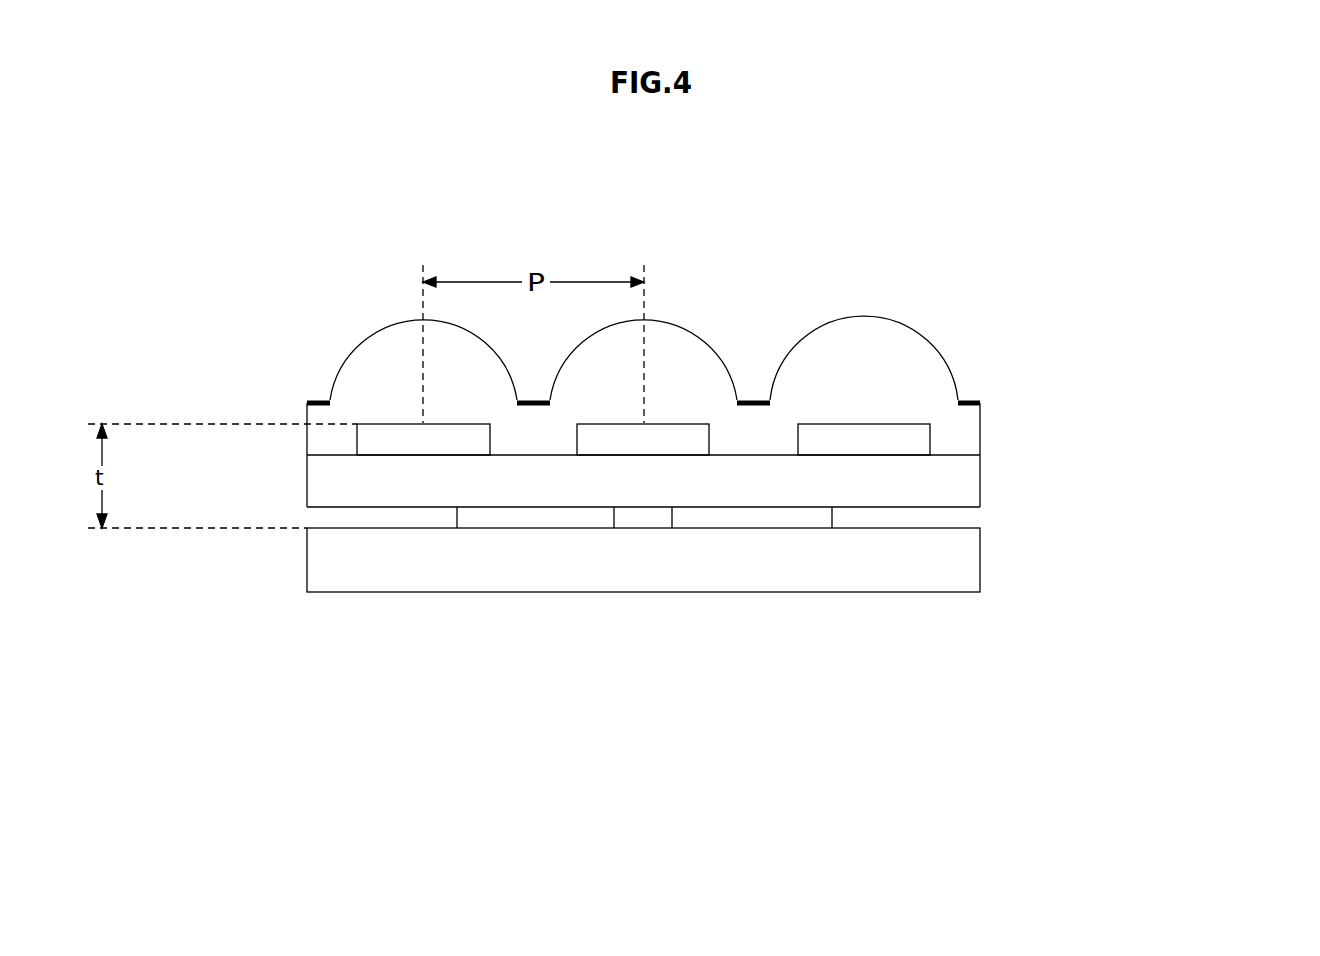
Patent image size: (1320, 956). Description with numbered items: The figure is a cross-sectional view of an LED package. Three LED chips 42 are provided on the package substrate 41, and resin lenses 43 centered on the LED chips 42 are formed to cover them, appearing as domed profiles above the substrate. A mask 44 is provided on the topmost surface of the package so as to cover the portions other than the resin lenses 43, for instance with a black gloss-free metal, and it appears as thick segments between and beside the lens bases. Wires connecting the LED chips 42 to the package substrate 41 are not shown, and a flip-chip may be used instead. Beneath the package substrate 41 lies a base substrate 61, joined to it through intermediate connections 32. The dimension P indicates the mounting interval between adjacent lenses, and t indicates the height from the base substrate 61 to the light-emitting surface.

The package substrate 41 is at (980, 485).
The LED chip 42 is at (930, 440).
The resin lens 43 is at (865, 320).
The mask 44 is at (968, 402).
The base substrate 61 is at (962, 563).
The bump / connection 32 is at (537, 530).